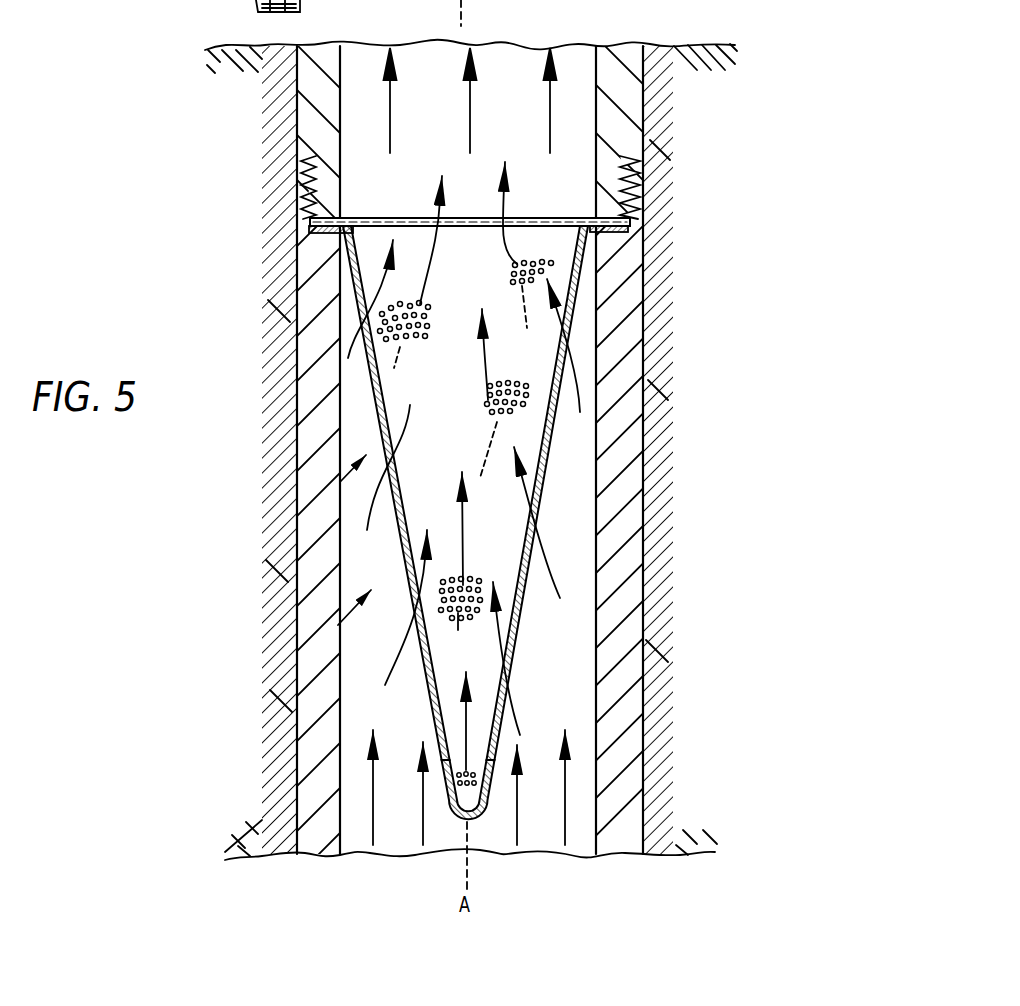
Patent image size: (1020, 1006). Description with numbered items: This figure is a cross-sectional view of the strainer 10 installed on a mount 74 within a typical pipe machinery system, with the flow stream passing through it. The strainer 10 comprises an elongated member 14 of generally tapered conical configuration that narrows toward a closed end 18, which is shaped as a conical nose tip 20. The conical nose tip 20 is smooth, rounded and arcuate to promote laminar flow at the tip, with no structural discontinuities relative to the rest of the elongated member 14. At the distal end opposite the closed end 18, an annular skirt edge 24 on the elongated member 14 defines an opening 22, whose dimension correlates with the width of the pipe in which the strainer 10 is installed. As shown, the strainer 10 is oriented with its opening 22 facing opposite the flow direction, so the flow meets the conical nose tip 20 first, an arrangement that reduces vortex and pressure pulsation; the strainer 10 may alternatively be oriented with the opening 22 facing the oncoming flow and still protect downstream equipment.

The strainer 10 is at (276, 670).
The elongated member 14 is at (340, 481).
The closed end 18 is at (478, 830).
The conical nose tip 20 is at (459, 820).
The opening 22 is at (400, 216).
The annular skirt edge 24 is at (338, 230).
The mount 74 is at (300, 185).